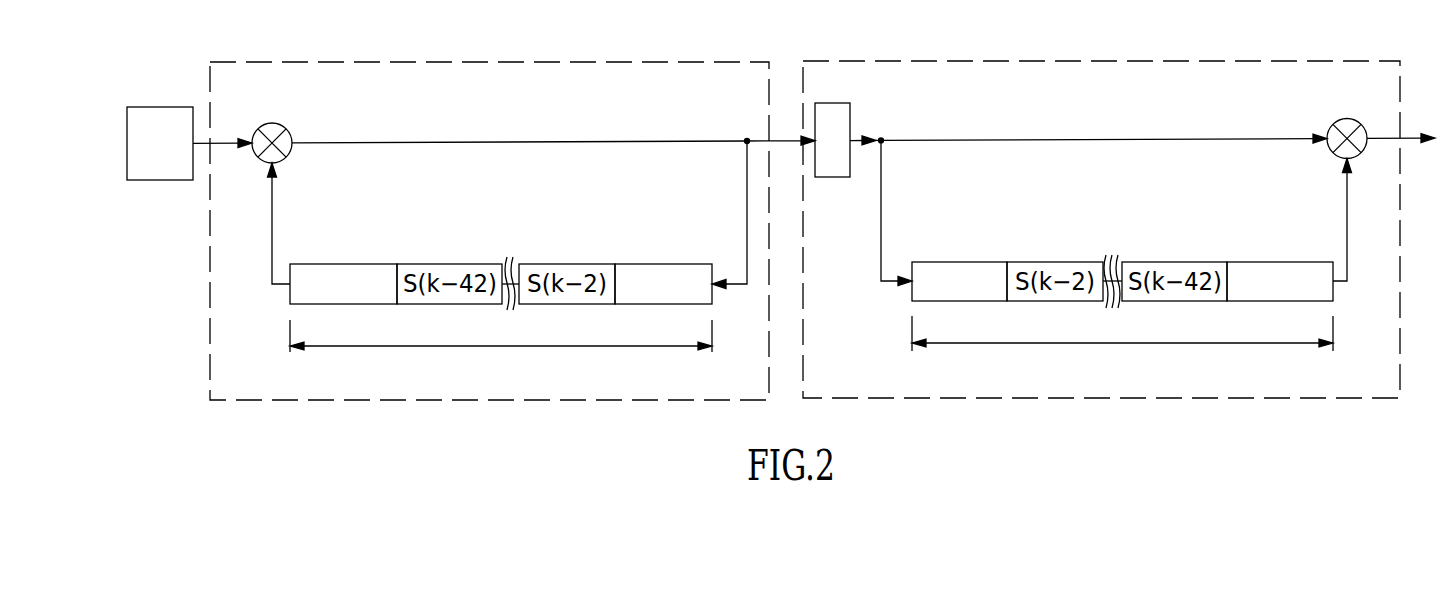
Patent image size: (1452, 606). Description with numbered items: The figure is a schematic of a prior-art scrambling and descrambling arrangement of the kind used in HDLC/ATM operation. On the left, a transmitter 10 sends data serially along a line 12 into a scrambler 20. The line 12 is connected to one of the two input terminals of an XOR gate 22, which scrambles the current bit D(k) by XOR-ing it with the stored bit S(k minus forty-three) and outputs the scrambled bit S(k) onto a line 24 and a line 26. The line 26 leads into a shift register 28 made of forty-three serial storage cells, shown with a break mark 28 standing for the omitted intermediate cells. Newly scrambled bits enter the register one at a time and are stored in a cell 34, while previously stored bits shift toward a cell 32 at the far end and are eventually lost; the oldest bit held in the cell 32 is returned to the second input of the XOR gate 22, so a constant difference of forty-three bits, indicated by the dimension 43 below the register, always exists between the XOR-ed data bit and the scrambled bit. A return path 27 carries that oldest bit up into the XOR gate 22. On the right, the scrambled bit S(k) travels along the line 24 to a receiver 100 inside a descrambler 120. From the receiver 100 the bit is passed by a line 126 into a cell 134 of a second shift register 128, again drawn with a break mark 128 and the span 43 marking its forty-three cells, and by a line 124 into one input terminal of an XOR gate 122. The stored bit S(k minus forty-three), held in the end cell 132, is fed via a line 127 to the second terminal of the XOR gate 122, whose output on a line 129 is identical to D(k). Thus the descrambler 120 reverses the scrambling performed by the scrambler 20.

The transmitter 10 is at (163, 107).
The line 12 is at (215, 141).
The scrambler 20 is at (512, 62).
The XOR gate 22 is at (280, 125).
The line 24 is at (612, 141).
The line 26 is at (747, 223).
The feedback path from shift register 27 is at (272, 210).
The shift register 28 is at (509, 243).
The cell 32 is at (346, 264).
The cell 34 is at (656, 264).
The register length (43 stages) 43 is at (811, 332).
The receiver 100 is at (833, 103).
The descrambler 120 is at (1112, 60).
The XOR gate 122 is at (1329, 126).
The line 124 is at (1119, 138).
The line 126 is at (881, 213).
The line 127 is at (1347, 219).
The shift register 128 is at (1120, 235).
The line 129 is at (1383, 140).
The shift register stage S(k-43) 132 is at (1276, 262).
The cell 134 is at (966, 262).